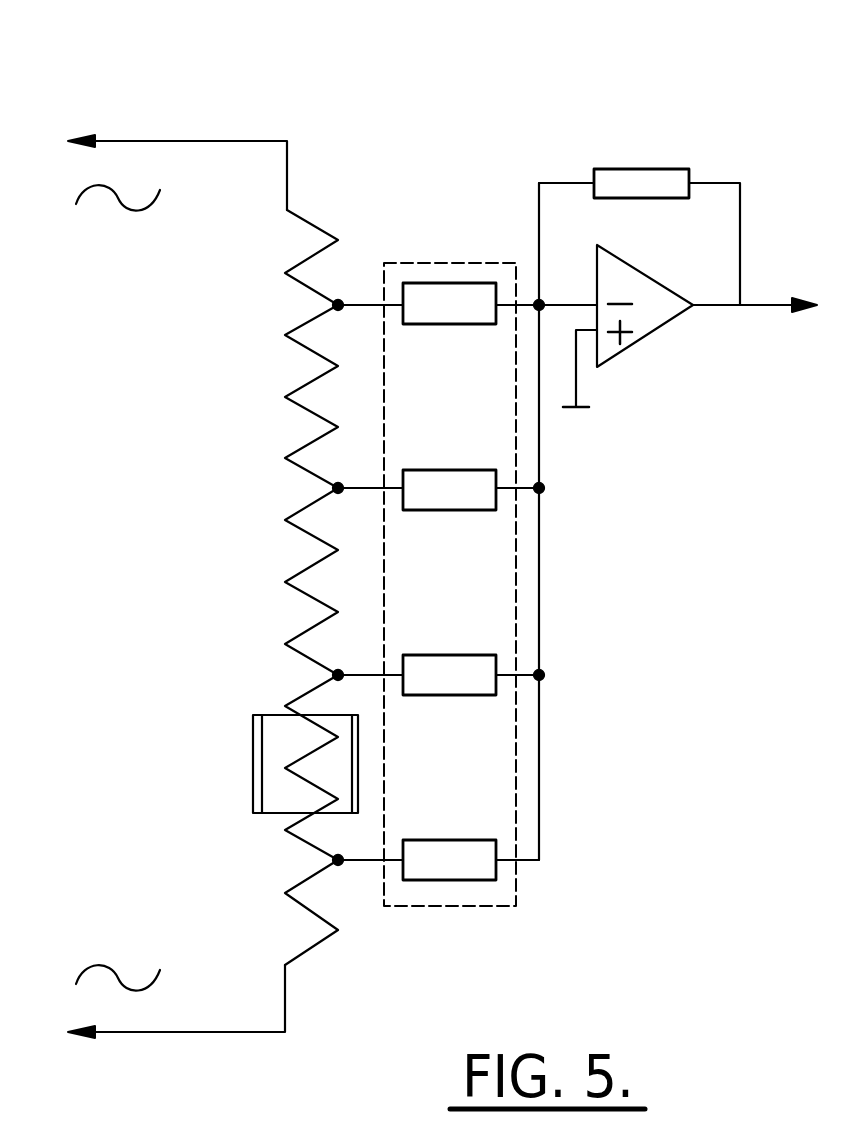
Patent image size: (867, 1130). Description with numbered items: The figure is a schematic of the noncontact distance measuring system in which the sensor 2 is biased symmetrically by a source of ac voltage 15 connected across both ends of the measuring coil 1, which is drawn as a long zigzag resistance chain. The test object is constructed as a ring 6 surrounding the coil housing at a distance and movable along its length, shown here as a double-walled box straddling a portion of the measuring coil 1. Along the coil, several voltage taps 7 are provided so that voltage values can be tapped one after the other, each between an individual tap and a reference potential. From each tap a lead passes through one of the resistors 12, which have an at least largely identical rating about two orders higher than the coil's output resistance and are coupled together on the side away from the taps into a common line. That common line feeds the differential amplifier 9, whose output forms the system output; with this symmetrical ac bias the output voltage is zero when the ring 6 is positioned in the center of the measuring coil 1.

The sensor 2 is at (347, 96).
The measuring coil 1 is at (312, 222).
The ring 6 is at (253, 755).
The voltage taps 7 is at (341, 864).
The differential amplifier 9 is at (652, 322).
The resistors 12 is at (467, 907).
The source of ac voltage 15 is at (160, 590).